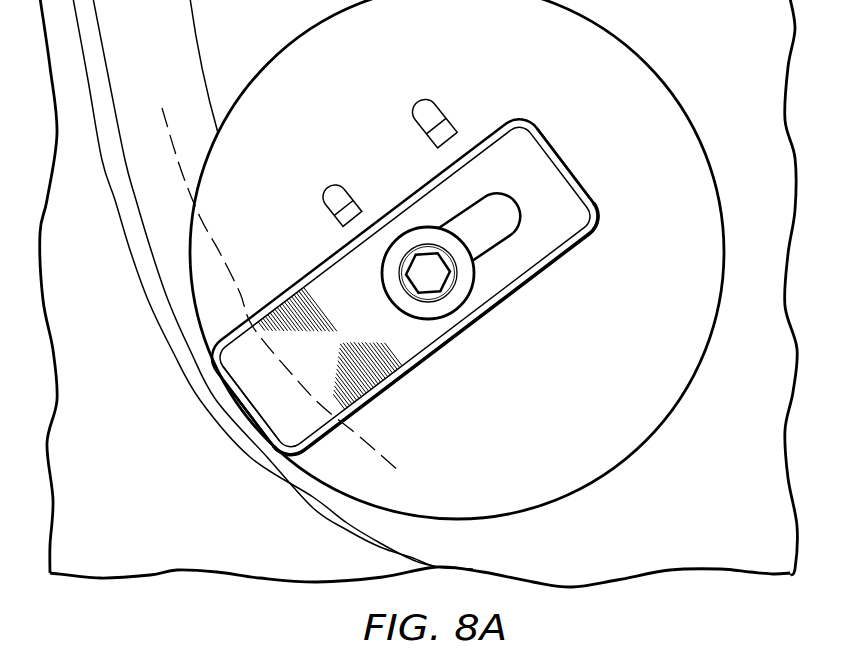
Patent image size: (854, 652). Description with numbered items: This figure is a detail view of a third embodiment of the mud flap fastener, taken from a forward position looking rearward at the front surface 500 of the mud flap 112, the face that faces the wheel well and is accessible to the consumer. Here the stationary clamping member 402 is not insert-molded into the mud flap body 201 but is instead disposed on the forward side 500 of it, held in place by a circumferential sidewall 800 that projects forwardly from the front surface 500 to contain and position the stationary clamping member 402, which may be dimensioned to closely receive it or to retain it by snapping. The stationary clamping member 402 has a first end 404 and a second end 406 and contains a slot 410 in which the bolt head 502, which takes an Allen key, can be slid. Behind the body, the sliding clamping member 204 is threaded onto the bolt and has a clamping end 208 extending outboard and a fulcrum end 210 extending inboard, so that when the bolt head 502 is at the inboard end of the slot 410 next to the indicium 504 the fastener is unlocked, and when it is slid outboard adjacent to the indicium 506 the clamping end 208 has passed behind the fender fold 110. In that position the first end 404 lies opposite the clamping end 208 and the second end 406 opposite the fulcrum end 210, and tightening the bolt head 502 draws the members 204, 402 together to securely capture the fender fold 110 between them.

The fender fold 110 is at (217, 249).
The mud flap 112 is at (618, 545).
The mud flap body 201 is at (572, 437).
The sliding clamping member 204 is at (402, 348).
The clamping end 208 is at (243, 393).
The fulcrum end 210 is at (557, 157).
The stationary clamping member 402 is at (405, 303).
The first end 404 is at (260, 423).
The second end 406 is at (577, 197).
The slot 410 is at (503, 228).
The front surface 500 is at (667, 313).
The bolt head 502 is at (394, 301).
The indicium 504 is at (418, 101).
The indicium 506 is at (329, 189).
The circumferential sidewall 800 is at (522, 121).